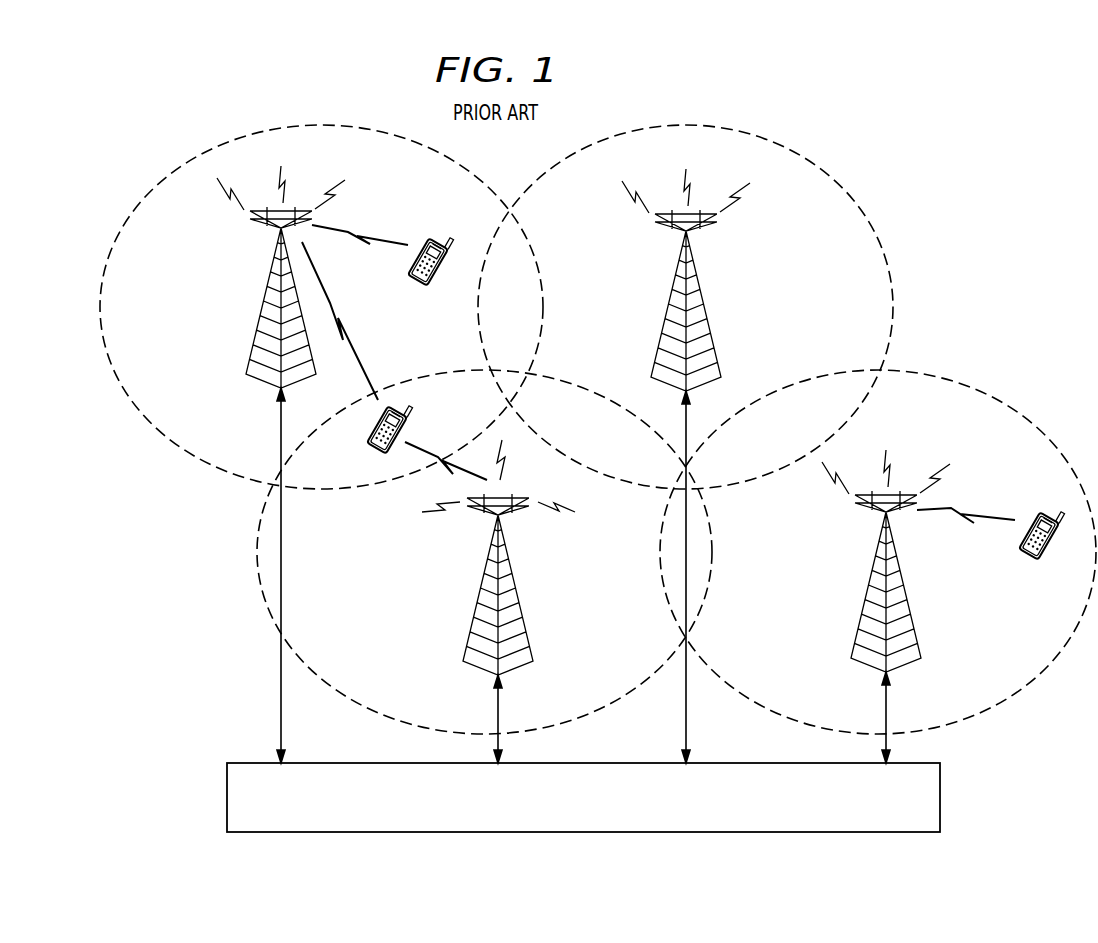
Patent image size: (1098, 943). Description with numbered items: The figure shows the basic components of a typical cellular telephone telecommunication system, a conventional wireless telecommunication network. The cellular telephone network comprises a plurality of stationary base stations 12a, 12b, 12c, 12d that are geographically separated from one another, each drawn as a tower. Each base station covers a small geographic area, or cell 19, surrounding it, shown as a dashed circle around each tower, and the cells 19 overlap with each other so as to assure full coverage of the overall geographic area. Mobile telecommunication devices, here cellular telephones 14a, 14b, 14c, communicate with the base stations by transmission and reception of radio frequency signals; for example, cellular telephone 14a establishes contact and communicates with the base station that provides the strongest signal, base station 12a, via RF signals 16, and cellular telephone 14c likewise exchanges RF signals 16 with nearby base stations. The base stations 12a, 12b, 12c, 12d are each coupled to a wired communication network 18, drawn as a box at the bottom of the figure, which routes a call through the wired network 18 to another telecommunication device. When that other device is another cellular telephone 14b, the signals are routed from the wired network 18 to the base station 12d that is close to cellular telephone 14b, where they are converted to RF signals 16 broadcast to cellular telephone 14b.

The base station 12a is at (255, 328).
The base station 12b is at (477, 604).
The base station 12c is at (710, 327).
The base station 12d is at (864, 604).
The cellular telephone 14a is at (430, 238).
The cellular telephone 14b is at (1024, 553).
The cellular telephone 14c is at (369, 444).
The RF signals 16 is at (370, 230).
The wired communication network 18 is at (941, 796).
The cell 19 is at (882, 246).